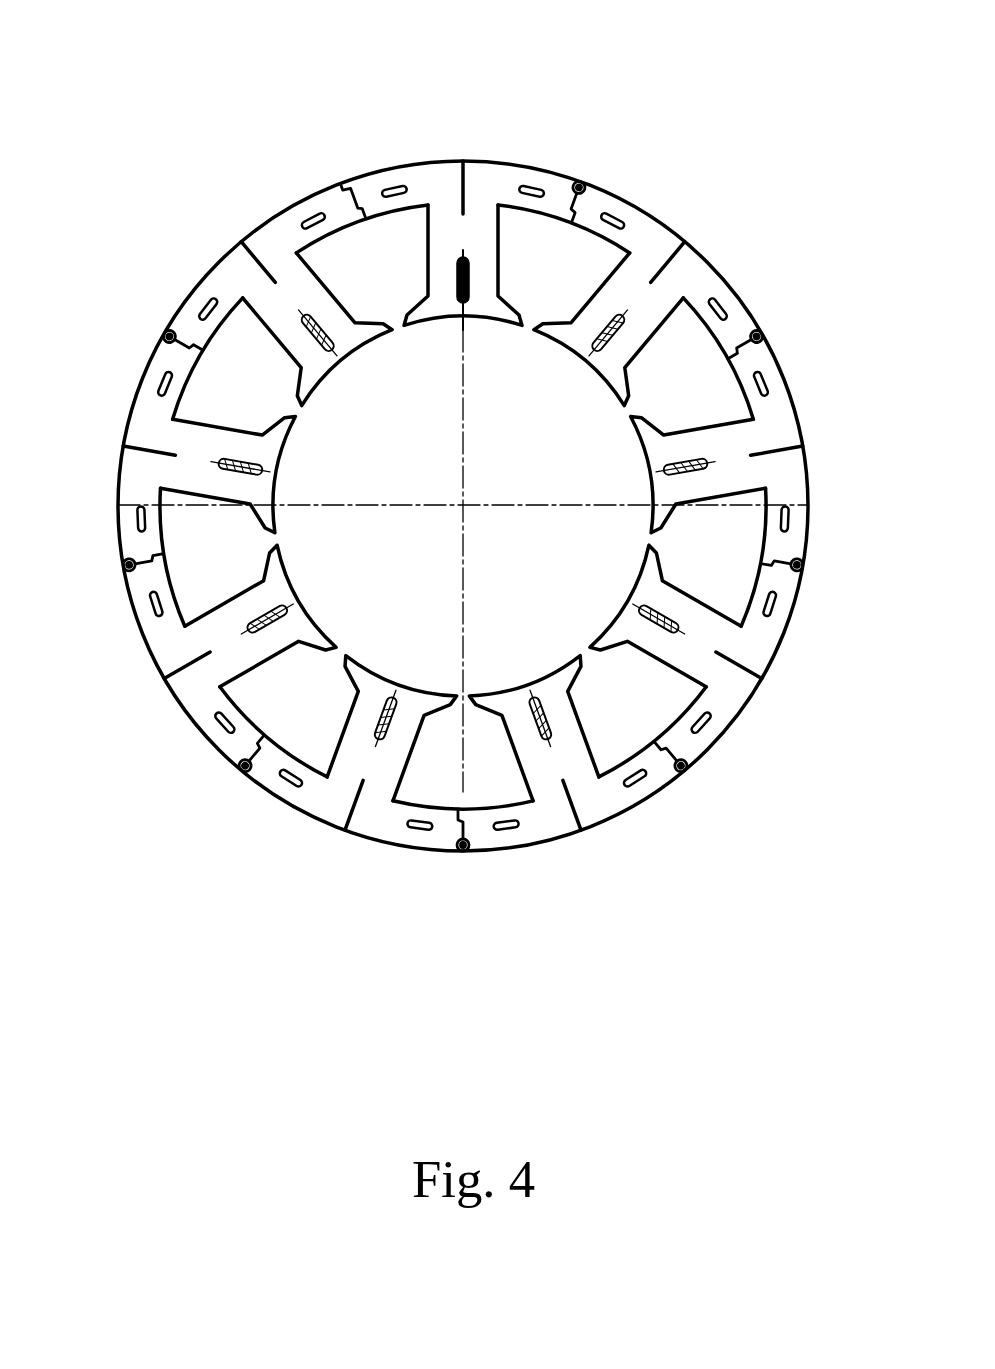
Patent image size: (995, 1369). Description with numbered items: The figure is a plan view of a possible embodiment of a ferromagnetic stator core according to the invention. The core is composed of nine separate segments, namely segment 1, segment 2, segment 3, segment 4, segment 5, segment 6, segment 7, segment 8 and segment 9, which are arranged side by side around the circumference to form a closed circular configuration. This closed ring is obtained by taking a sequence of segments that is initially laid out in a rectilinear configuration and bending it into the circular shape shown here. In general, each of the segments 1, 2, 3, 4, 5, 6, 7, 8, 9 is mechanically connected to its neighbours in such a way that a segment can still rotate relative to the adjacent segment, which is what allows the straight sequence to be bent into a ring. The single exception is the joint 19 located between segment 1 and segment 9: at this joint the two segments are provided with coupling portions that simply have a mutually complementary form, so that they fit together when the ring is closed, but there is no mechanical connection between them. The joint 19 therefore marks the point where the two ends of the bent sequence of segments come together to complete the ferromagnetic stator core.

The segment 1 is at (240, 268).
The segment 2 is at (143, 440).
The segment 3 is at (190, 678).
The segment 4 is at (340, 795).
The segment 5 is at (593, 797).
The segment 6 is at (757, 652).
The segment 7 is at (787, 443).
The segment 8 is at (657, 243).
The segment 9 is at (488, 185).
The joint 19 is at (341, 172).